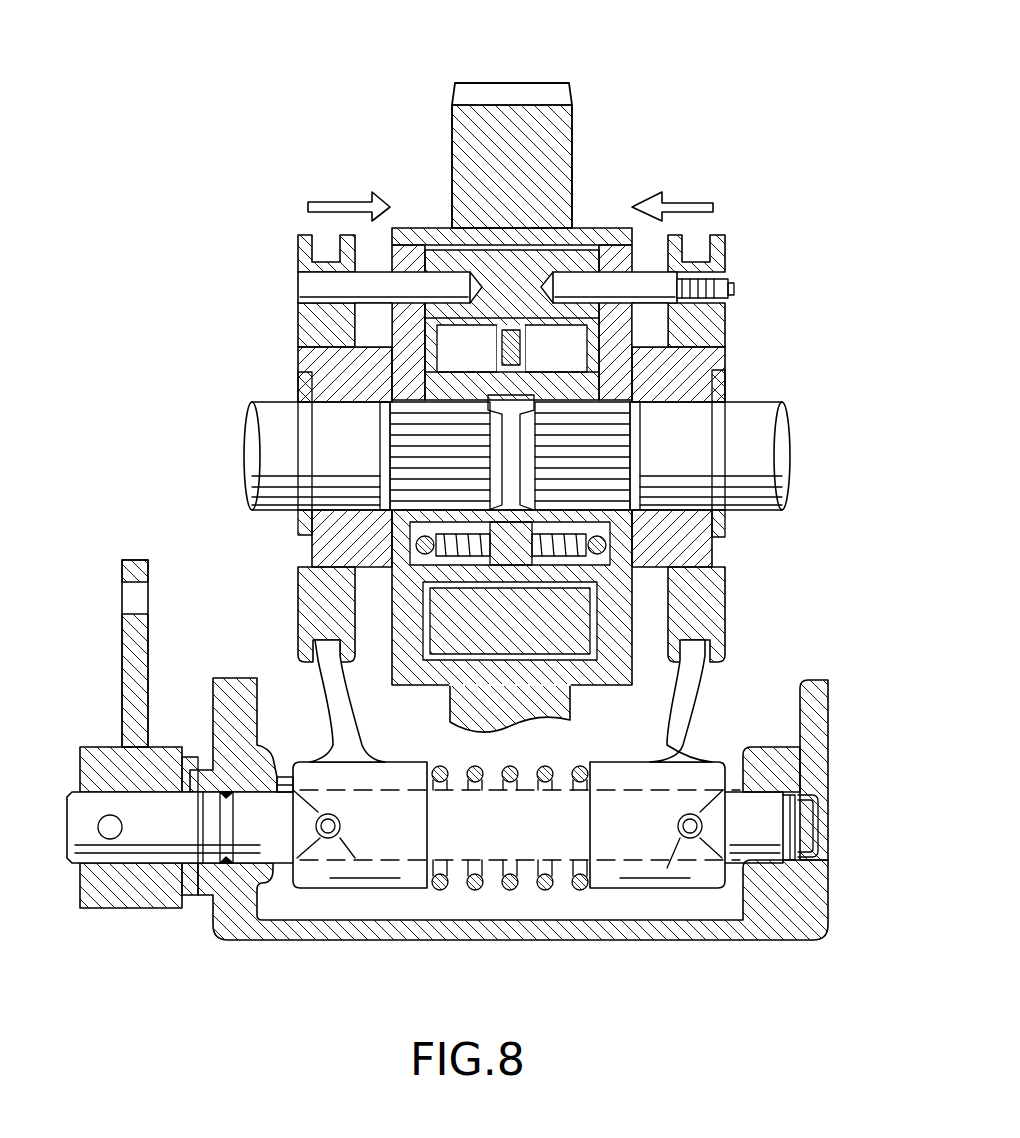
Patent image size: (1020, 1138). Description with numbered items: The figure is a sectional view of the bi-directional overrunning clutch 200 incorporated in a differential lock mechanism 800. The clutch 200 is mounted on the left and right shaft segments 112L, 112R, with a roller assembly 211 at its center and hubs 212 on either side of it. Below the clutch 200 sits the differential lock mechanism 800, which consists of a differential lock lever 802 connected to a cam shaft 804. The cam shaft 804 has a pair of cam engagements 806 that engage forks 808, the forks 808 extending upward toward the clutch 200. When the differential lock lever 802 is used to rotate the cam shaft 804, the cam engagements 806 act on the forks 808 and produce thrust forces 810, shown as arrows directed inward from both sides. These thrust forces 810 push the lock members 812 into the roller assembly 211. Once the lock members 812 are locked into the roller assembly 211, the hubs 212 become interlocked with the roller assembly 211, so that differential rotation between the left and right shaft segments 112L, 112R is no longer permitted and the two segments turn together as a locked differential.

The bi-directional overrunning clutch 200 is at (405, 84).
The roller assembly 211 is at (530, 273).
The hubs 212 is at (408, 370).
The thrust forces 810 is at (340, 198).
The lock members 812 is at (381, 278).
The left shaft segment 112L is at (262, 462).
The right shaft segment 112R is at (768, 467).
The differential lock mechanism 800 is at (298, 908).
The differential lock lever 802 is at (150, 637).
The cam shaft 804 is at (92, 830).
The cam engagements 806 is at (332, 840).
The forks 808 is at (333, 692).